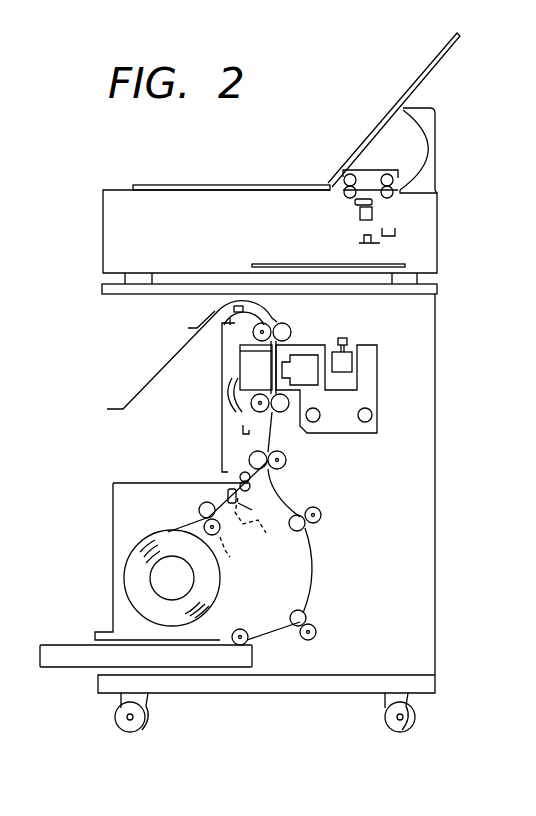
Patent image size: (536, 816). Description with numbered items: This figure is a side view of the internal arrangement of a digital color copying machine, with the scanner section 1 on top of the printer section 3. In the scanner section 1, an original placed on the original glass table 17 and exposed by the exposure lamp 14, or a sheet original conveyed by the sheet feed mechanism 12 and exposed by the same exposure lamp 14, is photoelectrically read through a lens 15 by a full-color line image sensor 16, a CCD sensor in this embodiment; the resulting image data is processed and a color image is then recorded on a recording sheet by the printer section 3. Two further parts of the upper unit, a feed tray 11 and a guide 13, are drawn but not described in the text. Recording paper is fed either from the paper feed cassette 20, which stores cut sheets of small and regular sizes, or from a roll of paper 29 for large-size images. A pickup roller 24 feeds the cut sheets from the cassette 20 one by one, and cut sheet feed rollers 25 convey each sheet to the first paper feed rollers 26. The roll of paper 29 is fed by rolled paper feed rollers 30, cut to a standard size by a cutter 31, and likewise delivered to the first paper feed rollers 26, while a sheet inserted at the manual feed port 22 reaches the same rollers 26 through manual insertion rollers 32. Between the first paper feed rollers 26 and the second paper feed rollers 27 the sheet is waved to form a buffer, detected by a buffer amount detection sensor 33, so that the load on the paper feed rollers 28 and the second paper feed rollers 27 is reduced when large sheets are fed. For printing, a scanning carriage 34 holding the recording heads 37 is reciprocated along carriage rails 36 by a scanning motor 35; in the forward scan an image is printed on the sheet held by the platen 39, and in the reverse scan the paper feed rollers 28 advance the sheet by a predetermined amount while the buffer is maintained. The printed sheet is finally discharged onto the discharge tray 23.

The scanner section 1 is at (437, 232).
The printer section 3 is at (435, 562).
The document feed tray 11 is at (460, 36).
The sheet feed mechanism 12 is at (393, 170).
The document guide 13 is at (437, 121).
The exposure lamp 14 is at (352, 203).
The lens 15 is at (375, 212).
The full-color line image sensor 16 is at (357, 241).
The original glass table 17 is at (173, 184).
The paper feed cassette 20 is at (62, 668).
The manual feed port 22 is at (221, 476).
The discharge tray 23 is at (123, 405).
The pickup roller 24 is at (250, 640).
The cut sheet feed rollers 25 is at (322, 527).
The first paper feed rollers 26 is at (288, 468).
The second paper feed rollers 27 is at (288, 413).
The paper feed rollers 28 is at (275, 318).
The roll of paper 29 is at (220, 600).
The rolled paper feed rollers 30 is at (217, 535).
The cutter 31 is at (252, 523).
The manual insertion rollers 32 is at (241, 470).
The buffer amount detection sensor 33 is at (240, 432).
The scanning carriage 34 is at (378, 432).
The scanning motor 35 is at (352, 345).
The carriage rails 36 is at (320, 413).
The recording heads 37 is at (322, 376).
The platen 39 is at (237, 364).